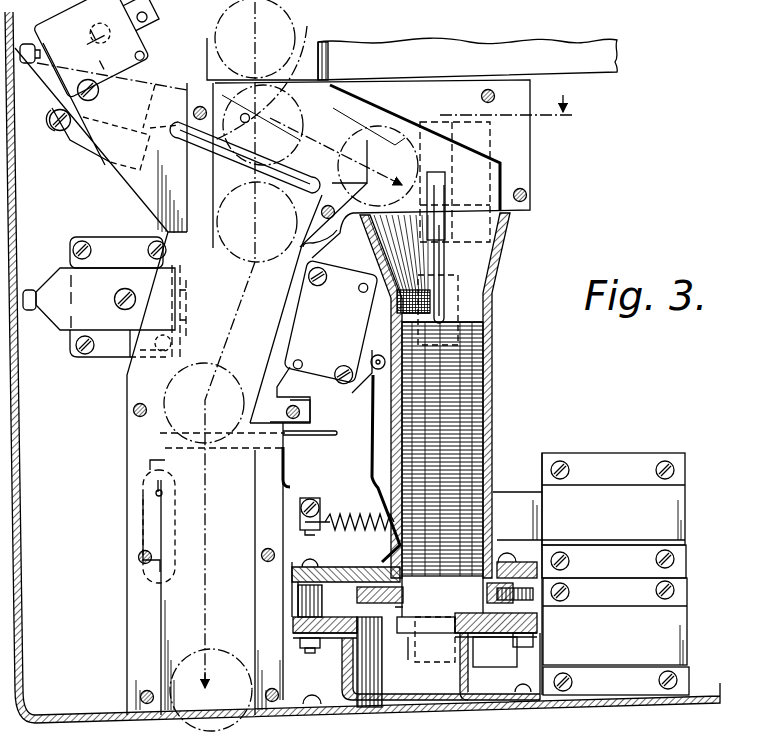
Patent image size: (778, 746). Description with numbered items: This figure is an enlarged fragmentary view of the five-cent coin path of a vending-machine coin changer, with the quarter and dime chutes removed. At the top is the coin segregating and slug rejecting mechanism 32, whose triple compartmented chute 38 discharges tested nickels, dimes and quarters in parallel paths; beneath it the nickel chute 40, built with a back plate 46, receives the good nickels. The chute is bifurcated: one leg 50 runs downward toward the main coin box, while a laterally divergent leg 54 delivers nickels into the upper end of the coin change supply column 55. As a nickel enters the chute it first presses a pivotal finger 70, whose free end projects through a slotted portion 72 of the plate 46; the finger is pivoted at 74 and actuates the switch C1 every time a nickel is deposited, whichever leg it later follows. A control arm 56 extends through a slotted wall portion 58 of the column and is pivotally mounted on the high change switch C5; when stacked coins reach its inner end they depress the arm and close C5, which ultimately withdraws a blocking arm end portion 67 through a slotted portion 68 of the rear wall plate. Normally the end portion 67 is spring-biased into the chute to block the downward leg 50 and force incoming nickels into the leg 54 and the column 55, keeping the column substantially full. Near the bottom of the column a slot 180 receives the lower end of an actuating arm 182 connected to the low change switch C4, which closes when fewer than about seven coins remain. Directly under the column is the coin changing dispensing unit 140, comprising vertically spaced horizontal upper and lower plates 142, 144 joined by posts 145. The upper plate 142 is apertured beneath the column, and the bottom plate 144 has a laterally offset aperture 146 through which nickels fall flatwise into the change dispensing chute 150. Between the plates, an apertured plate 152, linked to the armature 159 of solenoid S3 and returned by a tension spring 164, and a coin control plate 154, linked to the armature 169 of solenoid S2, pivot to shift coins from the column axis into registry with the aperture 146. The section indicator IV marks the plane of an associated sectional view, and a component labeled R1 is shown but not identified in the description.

The coin segregating and slug rejecting mechanism 32 is at (545, 62).
The triple compartmented chute 38 is at (318, 52).
The chute 40 is at (333, 97).
The back plate 46 is at (357, 110).
The laterally divergent leg 54 is at (375, 128).
The downwardly directed leg 50 is at (177, 385).
The coin change supply column 55 is at (490, 293).
The control arm 56 is at (64, 141).
The slotted wall portion 58 is at (450, 302).
The arm end portion 67 is at (297, 175).
The slotted portion 68 is at (292, 138).
The pivotal finger 70 is at (267, 74).
The slotted portion 72 is at (243, 116).
The pivot 74 is at (148, 17).
The coin changing dispensing unit 140 is at (291, 608).
The upper plate 142 is at (298, 577).
The bottom plate 144 is at (297, 630).
The posts 145 is at (302, 590).
The aperture 146 is at (357, 652).
The change dispensing chute 150 is at (422, 700).
The apertured plate 152 is at (356, 597).
The coin control plate 154 is at (408, 640).
The armature 159 is at (515, 495).
The tension spring 164 is at (355, 512).
The armature 169 is at (540, 665).
The slot 180 is at (398, 543).
The actuating arm 182 is at (377, 450).
The switch C1 is at (106, 85).
The low change switch C4 is at (327, 326).
The high change switch C5 is at (455, 182).
The relay R1 is at (104, 297).
The solenoid S2 is at (677, 640).
The solenoid S3 is at (672, 510).
The section line IV is at (563, 119).